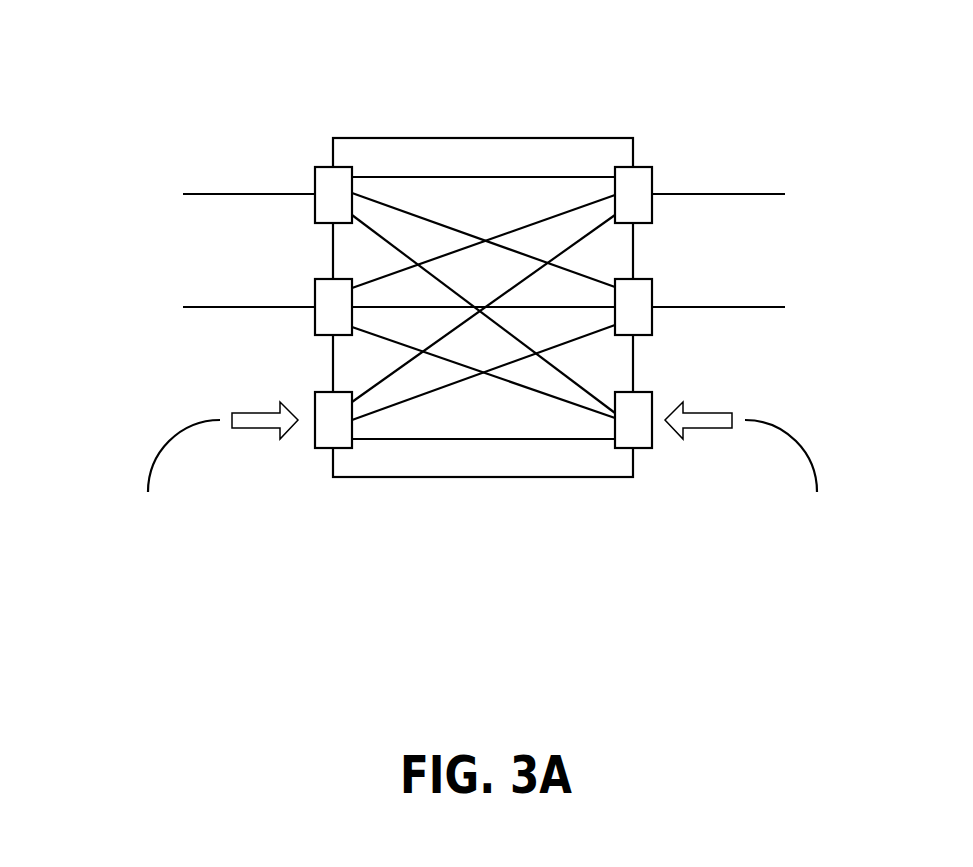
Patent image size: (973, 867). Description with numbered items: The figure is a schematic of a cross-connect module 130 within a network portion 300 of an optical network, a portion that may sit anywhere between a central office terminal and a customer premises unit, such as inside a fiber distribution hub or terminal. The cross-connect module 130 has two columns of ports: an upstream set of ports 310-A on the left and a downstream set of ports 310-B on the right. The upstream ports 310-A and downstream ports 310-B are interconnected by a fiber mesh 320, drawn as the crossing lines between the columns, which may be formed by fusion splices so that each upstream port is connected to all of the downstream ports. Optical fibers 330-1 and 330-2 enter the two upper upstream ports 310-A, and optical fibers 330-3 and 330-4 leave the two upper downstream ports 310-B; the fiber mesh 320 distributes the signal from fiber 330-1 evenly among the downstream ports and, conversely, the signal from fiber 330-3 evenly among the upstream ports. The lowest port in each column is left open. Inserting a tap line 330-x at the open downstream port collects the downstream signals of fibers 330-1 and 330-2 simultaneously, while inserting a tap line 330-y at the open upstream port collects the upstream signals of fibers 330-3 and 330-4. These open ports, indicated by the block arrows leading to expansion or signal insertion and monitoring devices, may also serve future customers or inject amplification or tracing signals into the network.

The network portion 300 is at (302, 37).
The cross-connect module 130 is at (572, 138).
The fiber mesh 320 is at (440, 150).
The upstream set of ports 310-A is at (316, 167).
The downstream set of ports 310-B is at (650, 166).
The optical fiber 330-1 is at (203, 194).
The optical fiber 330-2 is at (203, 306).
The optical fiber 330-3 is at (765, 194).
The optical fiber 330-4 is at (765, 306).
The tap line 330-x is at (805, 438).
The tap line 330-y is at (157, 438).